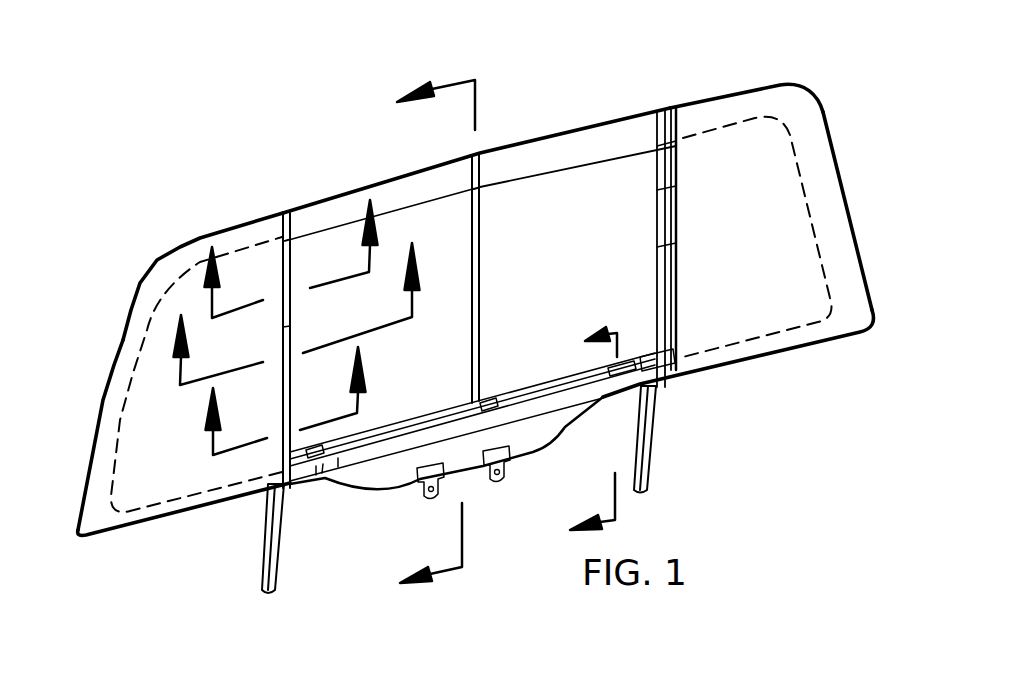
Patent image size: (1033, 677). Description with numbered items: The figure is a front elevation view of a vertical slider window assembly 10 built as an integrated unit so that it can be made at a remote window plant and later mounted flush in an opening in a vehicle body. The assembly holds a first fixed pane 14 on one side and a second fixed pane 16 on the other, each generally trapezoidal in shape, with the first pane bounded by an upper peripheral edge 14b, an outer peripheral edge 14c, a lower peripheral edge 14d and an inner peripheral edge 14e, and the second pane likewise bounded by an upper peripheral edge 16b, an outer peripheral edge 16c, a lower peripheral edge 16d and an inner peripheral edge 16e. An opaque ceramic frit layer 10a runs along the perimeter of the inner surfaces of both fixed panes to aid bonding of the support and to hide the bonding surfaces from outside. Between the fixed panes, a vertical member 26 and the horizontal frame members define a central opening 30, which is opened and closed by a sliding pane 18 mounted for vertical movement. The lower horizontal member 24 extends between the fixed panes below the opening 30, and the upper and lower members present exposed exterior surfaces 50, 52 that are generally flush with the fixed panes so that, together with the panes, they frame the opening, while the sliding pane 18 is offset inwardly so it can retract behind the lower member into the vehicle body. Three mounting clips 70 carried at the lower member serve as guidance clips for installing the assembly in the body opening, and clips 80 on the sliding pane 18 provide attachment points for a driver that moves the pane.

The vertical slider window assembly 10 is at (132, 227).
The ceramic frit layer 10a is at (133, 293).
The first fixed pane 14 is at (769, 329).
The upper peripheral edge 14b is at (722, 93).
The outer peripheral edge 14c is at (853, 217).
The lower peripheral edge 14d is at (728, 370).
The inner peripheral edge 14e is at (657, 247).
The second fixed pane 16 is at (147, 512).
The upper peripheral edge 16b is at (197, 240).
The outer peripheral edge 16c is at (113, 367).
The lower peripheral edge 16d is at (200, 513).
The inner peripheral edge 16e is at (305, 324).
The sliding pane 18 is at (440, 220).
The lower horizontal member 24 is at (302, 520).
The vertical member 26 is at (657, 187).
The central opening 30 is at (533, 203).
The exposed exterior surface 50 is at (323, 212).
The exposed exterior surface 52 is at (602, 420).
The mounting clip 70 is at (627, 367).
The clip 80 is at (430, 500).